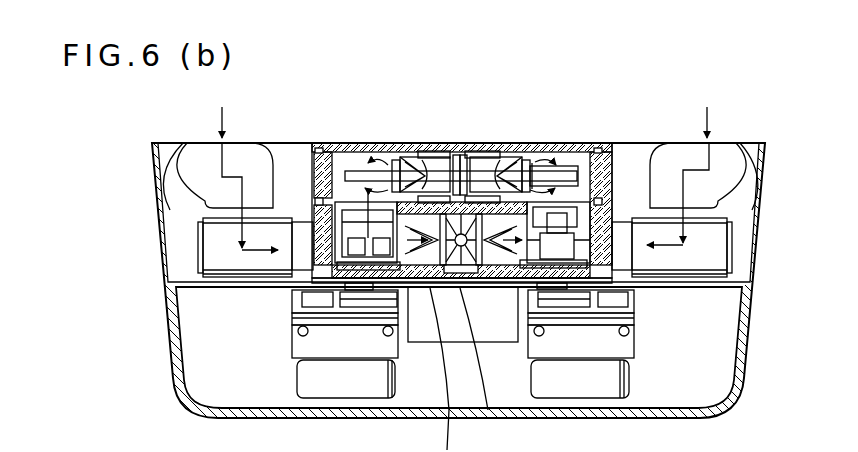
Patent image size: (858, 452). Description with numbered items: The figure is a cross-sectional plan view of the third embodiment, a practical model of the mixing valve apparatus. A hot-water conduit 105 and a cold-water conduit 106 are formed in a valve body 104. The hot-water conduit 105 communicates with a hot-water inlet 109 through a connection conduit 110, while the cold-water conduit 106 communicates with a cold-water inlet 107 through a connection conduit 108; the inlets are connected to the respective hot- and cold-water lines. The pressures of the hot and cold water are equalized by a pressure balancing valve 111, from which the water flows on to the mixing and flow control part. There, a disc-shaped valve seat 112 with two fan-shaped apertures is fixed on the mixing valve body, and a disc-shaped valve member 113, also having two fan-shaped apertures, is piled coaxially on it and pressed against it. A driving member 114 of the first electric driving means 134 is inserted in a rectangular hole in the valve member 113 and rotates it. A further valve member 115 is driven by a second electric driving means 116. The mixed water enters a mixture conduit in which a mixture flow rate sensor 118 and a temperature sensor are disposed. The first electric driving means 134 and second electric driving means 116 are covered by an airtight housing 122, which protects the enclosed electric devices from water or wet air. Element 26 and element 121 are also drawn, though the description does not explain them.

The cross-flow fan 26 is at (548, 146).
The valve body 104 is at (527, 146).
The hot-water conduit 105 is at (357, 146).
The cold-water conduit 106 is at (556, 150).
The cold-water inlet 107 is at (720, 143).
The connection conduit 108 is at (707, 244).
The hot-water inlet 109 is at (262, 143).
The connection conduit 110 is at (212, 256).
The pressure balancing valve 111 is at (432, 150).
The disc-shaped valve seat 112 is at (580, 200).
The disc-shaped valve member 113 is at (610, 158).
The driving member 114 is at (630, 282).
The valve member 115 is at (292, 292).
The second electric driving means 116 is at (397, 377).
The mixture flow rate sensor 118 is at (463, 332).
The fan hub 121 is at (458, 152).
The housing 122 is at (758, 345).
The first electric driving means 134 is at (630, 377).